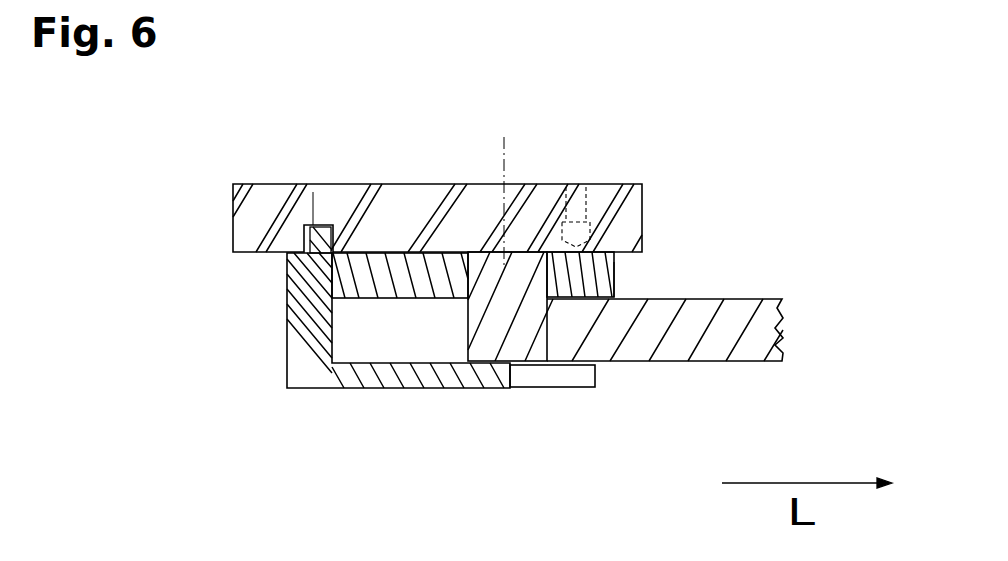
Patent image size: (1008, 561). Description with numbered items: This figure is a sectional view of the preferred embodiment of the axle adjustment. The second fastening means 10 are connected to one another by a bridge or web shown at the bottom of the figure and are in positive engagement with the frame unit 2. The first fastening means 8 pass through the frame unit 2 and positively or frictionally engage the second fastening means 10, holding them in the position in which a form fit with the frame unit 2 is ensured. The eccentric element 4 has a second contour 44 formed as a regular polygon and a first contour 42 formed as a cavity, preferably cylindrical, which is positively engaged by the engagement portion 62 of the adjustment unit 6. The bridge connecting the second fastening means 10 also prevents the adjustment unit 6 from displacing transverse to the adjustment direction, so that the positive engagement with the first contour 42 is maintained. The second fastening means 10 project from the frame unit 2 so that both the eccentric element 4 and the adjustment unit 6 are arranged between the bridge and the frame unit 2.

The frame unit 2 is at (630, 217).
The eccentric element 4 is at (355, 282).
The adjustment unit 6 is at (753, 357).
The first fastening means 8 is at (322, 212).
The second fastening means 10 is at (292, 316).
The first contour 42 is at (470, 252).
The second contour 44 is at (614, 285).
The engagement portion 62 is at (522, 272).